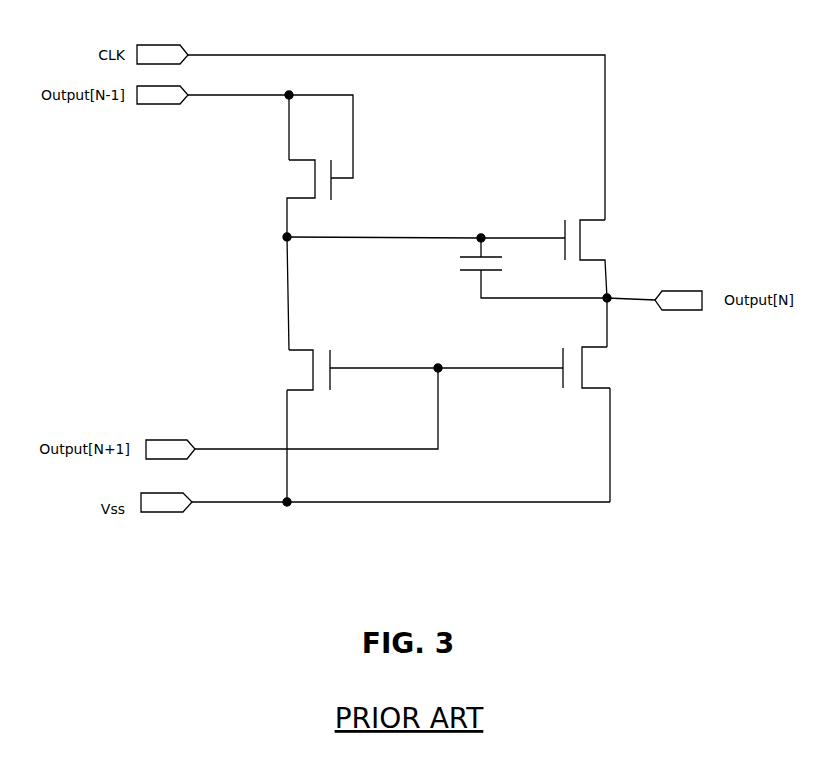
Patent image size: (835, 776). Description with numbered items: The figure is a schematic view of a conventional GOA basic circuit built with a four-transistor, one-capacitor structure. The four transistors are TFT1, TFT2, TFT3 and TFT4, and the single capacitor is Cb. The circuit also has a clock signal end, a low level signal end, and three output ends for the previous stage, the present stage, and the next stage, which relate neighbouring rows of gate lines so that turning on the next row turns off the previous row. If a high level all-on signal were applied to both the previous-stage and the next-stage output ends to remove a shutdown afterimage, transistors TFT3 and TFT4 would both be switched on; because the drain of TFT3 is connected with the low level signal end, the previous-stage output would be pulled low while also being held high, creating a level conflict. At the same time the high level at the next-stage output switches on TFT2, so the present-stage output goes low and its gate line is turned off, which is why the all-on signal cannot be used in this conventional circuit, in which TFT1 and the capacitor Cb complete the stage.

The transistor TFT1 is at (608, 259).
The transistor TFT2 is at (606, 367).
The transistor TFT3 is at (280, 370).
The transistor TFT4 is at (281, 198).
The capacitor Cb is at (465, 277).